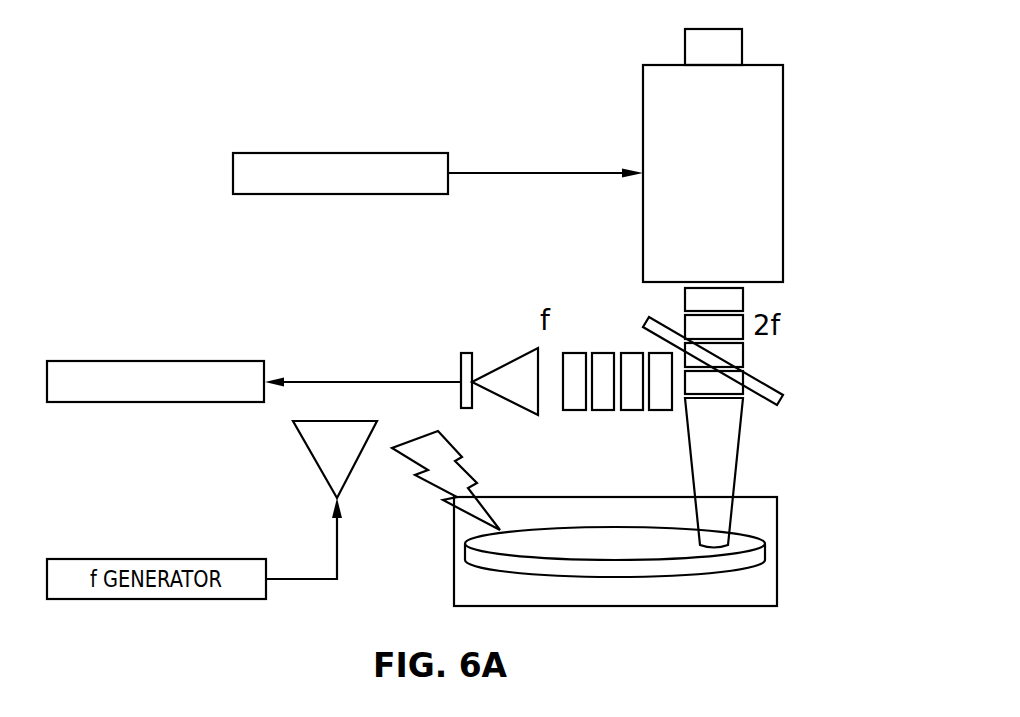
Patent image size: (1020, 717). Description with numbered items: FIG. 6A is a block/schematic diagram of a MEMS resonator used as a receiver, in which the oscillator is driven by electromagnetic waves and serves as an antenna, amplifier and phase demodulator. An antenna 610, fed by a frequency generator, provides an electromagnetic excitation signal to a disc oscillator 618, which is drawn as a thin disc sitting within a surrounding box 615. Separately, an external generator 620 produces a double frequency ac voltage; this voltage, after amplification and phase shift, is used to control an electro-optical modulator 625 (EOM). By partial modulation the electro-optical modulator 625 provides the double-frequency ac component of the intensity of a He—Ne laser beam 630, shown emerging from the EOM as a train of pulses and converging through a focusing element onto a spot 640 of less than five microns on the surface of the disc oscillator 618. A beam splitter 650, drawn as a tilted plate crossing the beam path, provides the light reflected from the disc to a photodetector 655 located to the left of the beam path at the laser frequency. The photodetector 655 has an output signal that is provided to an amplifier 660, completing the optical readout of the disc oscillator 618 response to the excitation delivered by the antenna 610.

The antenna 610 is at (357, 462).
The sample stage / chamber 615 is at (693, 593).
The disc oscillator 618 is at (612, 535).
The external generator 620 is at (342, 152).
The electro-optical modulator 625 is at (784, 172).
The He—Ne laser beam 630 is at (735, 472).
The spot 640 is at (712, 551).
The beam splitter 650 is at (768, 381).
The photodetector 655 is at (505, 362).
The amplifier 660 is at (155, 359).